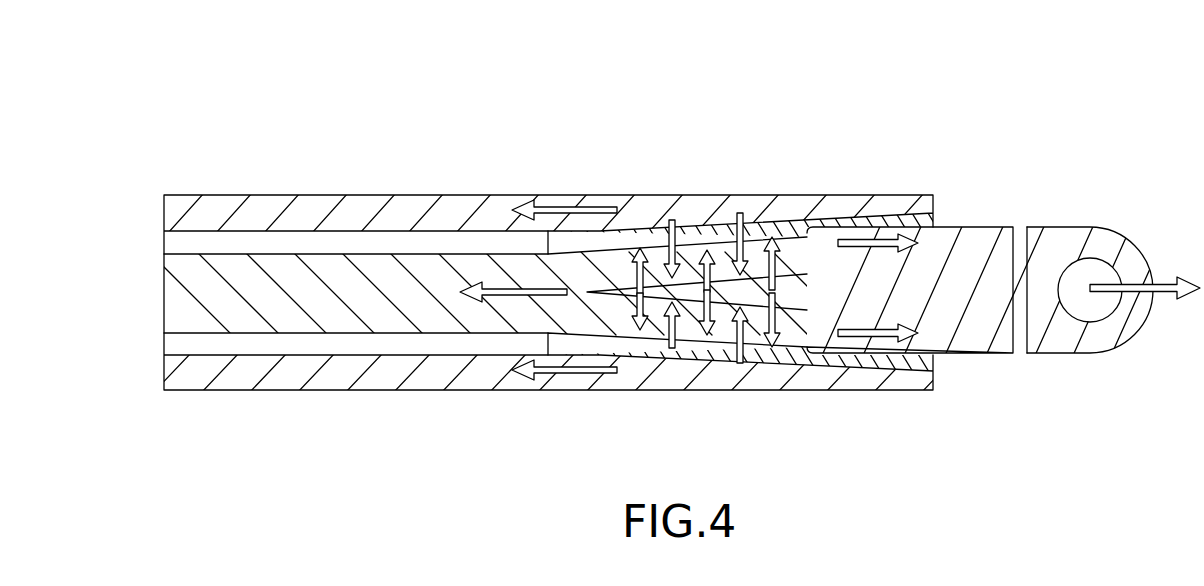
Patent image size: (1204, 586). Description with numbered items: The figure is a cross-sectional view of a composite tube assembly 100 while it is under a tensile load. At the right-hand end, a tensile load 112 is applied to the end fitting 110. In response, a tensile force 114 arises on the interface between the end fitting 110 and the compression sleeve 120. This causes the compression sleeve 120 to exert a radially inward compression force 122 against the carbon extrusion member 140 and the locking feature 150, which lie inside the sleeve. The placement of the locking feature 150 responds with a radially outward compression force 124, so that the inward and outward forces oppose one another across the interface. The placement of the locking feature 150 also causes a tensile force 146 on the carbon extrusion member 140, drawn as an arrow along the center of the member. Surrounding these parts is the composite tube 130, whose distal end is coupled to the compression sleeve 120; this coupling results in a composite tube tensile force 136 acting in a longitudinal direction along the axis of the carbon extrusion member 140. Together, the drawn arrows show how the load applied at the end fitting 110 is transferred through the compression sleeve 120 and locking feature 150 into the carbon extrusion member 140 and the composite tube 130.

The composite tube assembly 100 is at (1006, 98).
The end fitting 110 is at (1113, 255).
The tensile load 112 is at (1172, 278).
The tensile force 114 is at (882, 226).
The compression sleeve 120 is at (845, 214).
The radially inward compression force 122 is at (672, 220).
The radially outward compression force 124 is at (640, 268).
The composite tube 130 is at (264, 207).
The composite tube tensile force 136 is at (572, 209).
The carbon extrusion member 140 is at (173, 310).
The tensile force 146 is at (498, 291).
The locking feature 150 is at (787, 290).